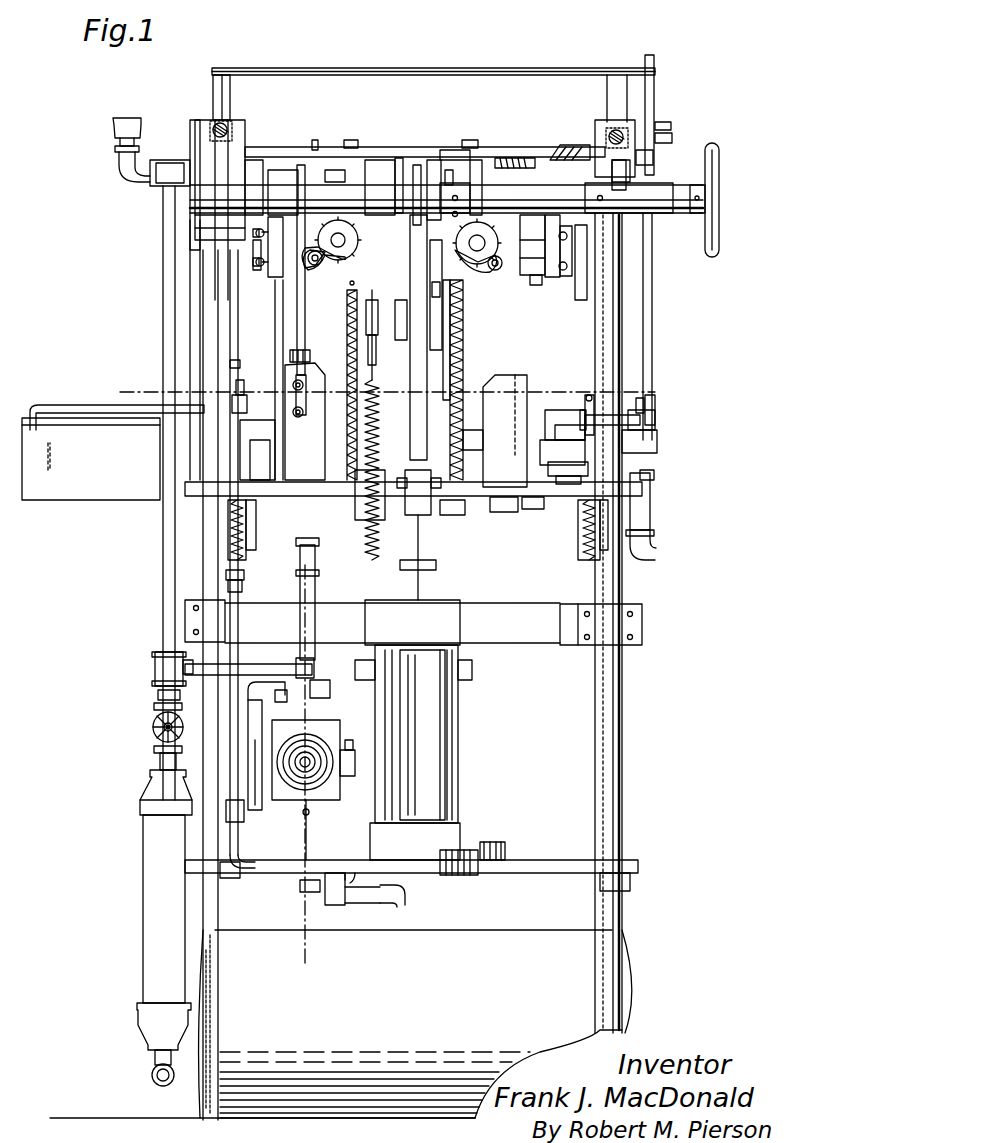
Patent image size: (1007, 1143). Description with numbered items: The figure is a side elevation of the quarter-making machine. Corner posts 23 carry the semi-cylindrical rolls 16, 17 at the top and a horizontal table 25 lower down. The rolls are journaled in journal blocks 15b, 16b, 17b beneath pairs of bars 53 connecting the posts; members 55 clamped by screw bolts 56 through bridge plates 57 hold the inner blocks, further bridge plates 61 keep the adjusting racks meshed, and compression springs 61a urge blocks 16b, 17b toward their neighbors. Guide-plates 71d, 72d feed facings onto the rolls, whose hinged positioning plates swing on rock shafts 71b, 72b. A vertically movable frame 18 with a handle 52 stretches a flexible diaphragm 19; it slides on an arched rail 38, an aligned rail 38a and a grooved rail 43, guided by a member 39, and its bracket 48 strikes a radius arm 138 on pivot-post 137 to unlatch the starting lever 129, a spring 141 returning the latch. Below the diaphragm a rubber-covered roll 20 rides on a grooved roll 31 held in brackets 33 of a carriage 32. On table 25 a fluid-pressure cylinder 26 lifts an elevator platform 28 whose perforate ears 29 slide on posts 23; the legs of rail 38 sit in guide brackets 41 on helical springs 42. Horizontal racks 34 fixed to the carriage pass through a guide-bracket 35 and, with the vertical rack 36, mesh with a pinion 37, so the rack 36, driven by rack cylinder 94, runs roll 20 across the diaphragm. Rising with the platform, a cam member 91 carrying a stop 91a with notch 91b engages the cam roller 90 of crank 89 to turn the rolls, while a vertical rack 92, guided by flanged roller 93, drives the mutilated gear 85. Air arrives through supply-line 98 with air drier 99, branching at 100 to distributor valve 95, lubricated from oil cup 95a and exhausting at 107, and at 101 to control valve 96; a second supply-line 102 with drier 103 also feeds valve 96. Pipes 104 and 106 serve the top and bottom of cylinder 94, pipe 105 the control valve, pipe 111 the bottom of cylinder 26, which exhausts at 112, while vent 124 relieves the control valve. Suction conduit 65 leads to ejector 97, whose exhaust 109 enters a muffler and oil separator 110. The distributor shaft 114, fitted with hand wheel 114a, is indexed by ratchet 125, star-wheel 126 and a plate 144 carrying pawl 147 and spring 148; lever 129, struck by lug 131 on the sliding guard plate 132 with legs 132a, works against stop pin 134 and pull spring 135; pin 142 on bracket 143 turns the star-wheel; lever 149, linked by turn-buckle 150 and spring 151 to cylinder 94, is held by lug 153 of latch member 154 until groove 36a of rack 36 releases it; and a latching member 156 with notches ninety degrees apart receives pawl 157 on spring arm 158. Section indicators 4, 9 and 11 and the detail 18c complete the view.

The section line 4 is at (133, 380).
The frame post 9 is at (212, 97).
The section line 11 / pipe 11 is at (315, 584).
The journal block 15b is at (440, 295).
The semi-cylindrical roll 16 is at (276, 268).
The journal block 16b is at (262, 262).
The semi-cylindrical roll 17 is at (552, 277).
The journal block 17b is at (540, 285).
The vertically movable frame 18 is at (630, 410).
The plate 18c is at (552, 410).
The flexible sheet or diaphragm 19 is at (562, 410).
The roll 20 is at (468, 435).
The corner post 23 is at (213, 295).
The horizontal plate or table 25 is at (520, 860).
The vertical fluid pressure cylinder 26 is at (455, 670).
The elevator platform 28 is at (505, 505).
The perforate ear 29 is at (640, 500).
The roll 31 is at (540, 503).
The carriage 32 is at (590, 468).
The bracket 33 is at (585, 445).
The horizontal rack 34 is at (432, 510).
The guide-bracket 35 is at (462, 510).
The vertical rack 36 is at (418, 350).
The groove 36a is at (400, 315).
The pinion 37 is at (368, 518).
The arched rail 38 is at (238, 440).
The rail 38a is at (62, 410).
The guide member 39 is at (585, 400).
The guide bracket 41 is at (250, 545).
The helical spring 42 is at (232, 520).
The grooved rail 43 is at (91, 459).
The ear or bracket 48 is at (640, 395).
The handle 52 is at (240, 395).
The bar 53 is at (510, 160).
The member 55 is at (352, 180).
The screw bolt 56 is at (350, 148).
The bridge plate 57 is at (374, 158).
The bridge plate 61 is at (258, 240).
The compression spring 61a is at (265, 265).
The fluid conduit 65 is at (190, 342).
The rock shaft 71b is at (303, 160).
The guide-plate 71d is at (258, 160).
The rock shaft 72b is at (540, 210).
The guide-plate 72d is at (578, 147).
The mutilated gear 85 is at (330, 180).
The crank 89 is at (340, 220).
The cam roller 90 is at (322, 268).
The cam member 91 is at (290, 447).
The stop 91a is at (270, 340).
The notch 91b is at (312, 290).
The vertical rack 92 is at (360, 366).
The flanged guide-roller 93 is at (462, 205).
The cylinder 94 is at (405, 728).
The distributor valve 95 is at (205, 160).
The oil cup 95a is at (118, 127).
The control valve 96 is at (325, 772).
The ejector 97 is at (322, 590).
The incoming fluid-pressure supply-line 98 is at (150, 1073).
The air drier 99 is at (148, 930).
The branch 100 is at (165, 575).
The branch 101 is at (185, 655).
The second incoming fluid-pressure supply-line 102 is at (355, 764).
The air drier 103 is at (330, 745).
The pipe 104 is at (200, 322).
The pipe 105 is at (232, 365).
The pipe 106 is at (232, 385).
The exhaust 107 is at (258, 233).
The exhaust 109 is at (325, 905).
The muffler and oil separator 110 is at (482, 930).
The pipe 111 is at (325, 690).
The exhaust 112 is at (262, 805).
The axial shaft 114 is at (262, 160).
The hand wheel 114a is at (712, 180).
The vent 124 is at (310, 812).
The ratchet 125 is at (590, 232).
The star-wheel 126 is at (302, 165).
The lever 129 is at (655, 88).
The lug 131 is at (638, 68).
The cover or guard plate 132 is at (318, 70).
The leg 132a is at (213, 78).
The stop pin 134 is at (672, 137).
The pull spring 135 is at (668, 124).
The vertical pivot-post 137 is at (655, 342).
The radius arm 138 is at (655, 423).
The spring 141 is at (372, 300).
The pin 142 is at (300, 350).
The bracket 143 is at (306, 375).
The plate 144 is at (445, 180).
The pawl 147 is at (470, 180).
The spring 148 is at (455, 198).
The lever 149 is at (418, 165).
The turn-buckle 150 is at (374, 330).
The spring 151 is at (368, 385).
The lug 153 is at (440, 183).
The latch member 154 is at (400, 200).
The latching member 156 is at (585, 250).
The latching pawl 157 is at (660, 160).
The spring arm 158 is at (612, 173).